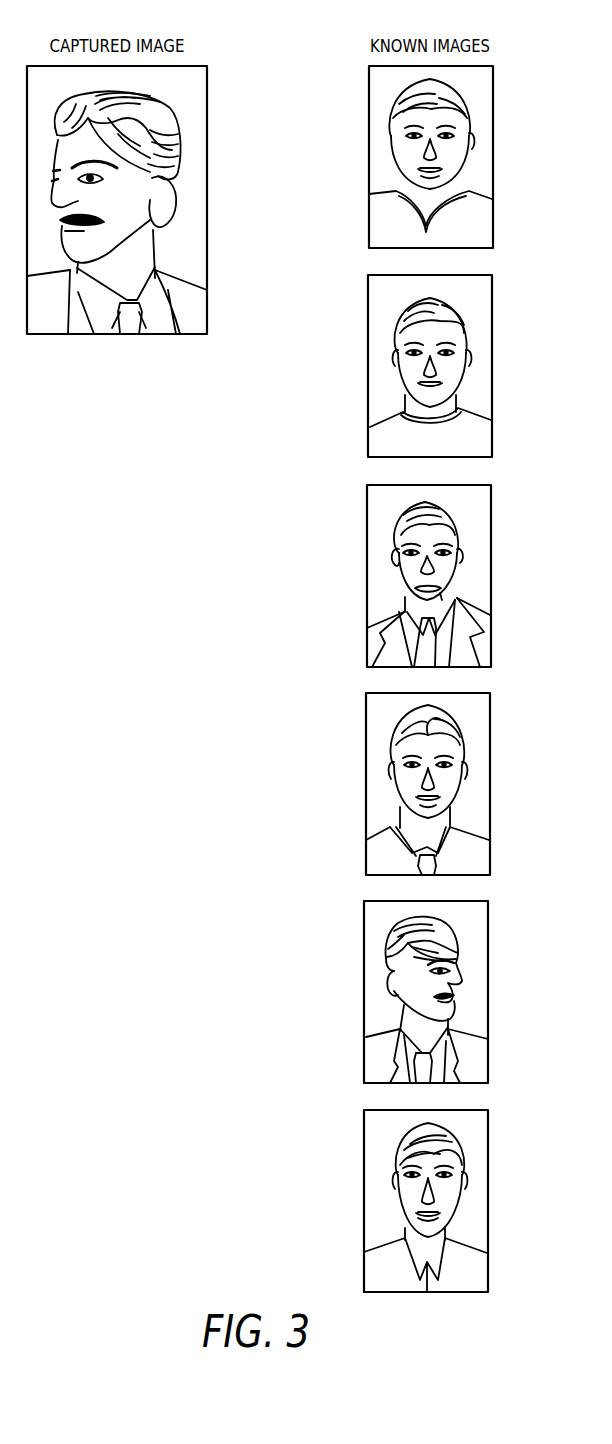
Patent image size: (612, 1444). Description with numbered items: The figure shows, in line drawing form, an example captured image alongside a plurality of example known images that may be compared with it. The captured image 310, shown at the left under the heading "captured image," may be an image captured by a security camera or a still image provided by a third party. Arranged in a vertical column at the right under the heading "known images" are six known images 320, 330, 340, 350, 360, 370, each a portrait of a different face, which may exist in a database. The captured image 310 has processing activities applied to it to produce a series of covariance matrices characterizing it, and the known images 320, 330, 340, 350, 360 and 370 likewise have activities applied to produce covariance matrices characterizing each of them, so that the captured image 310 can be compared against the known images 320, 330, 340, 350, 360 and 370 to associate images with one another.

The captured image 310 is at (117, 200).
The known image 320 is at (431, 157).
The known image 330 is at (430, 366).
The known image 340 is at (429, 576).
The known image 350 is at (428, 784).
The known image 360 is at (426, 992).
The known image 370 is at (426, 1201).